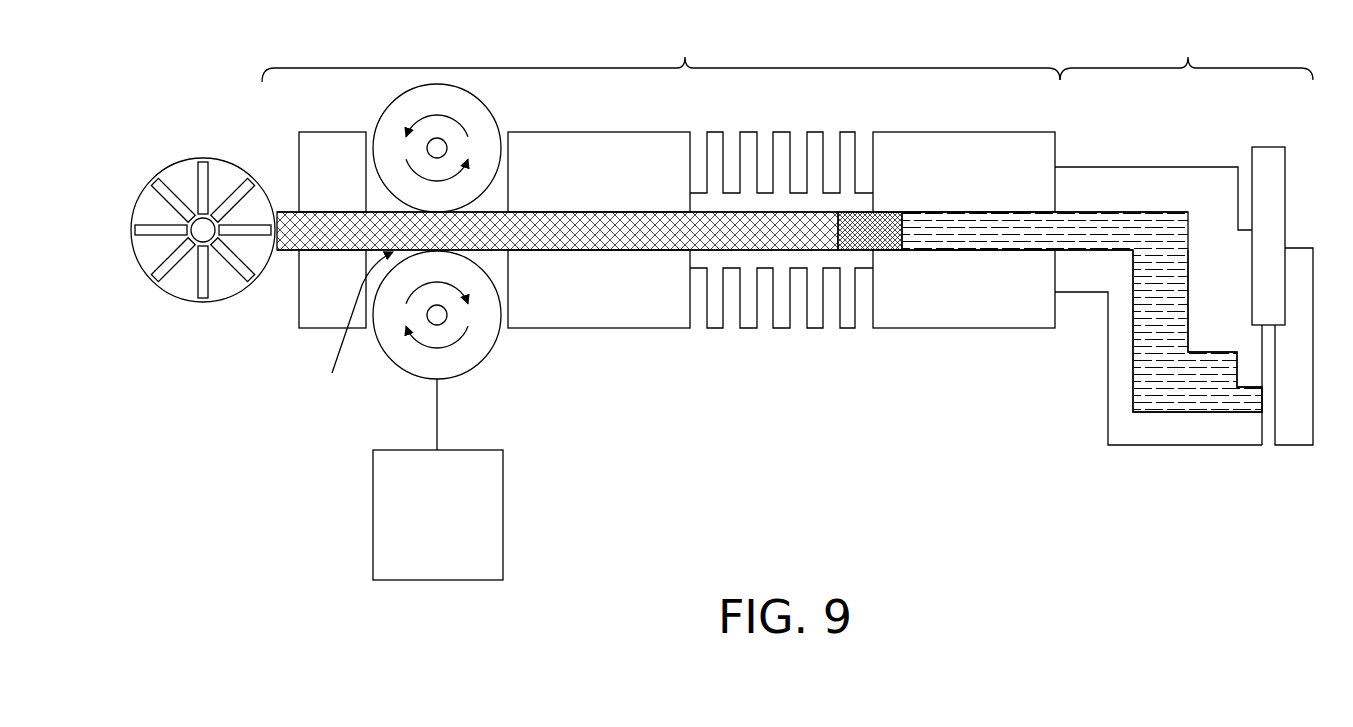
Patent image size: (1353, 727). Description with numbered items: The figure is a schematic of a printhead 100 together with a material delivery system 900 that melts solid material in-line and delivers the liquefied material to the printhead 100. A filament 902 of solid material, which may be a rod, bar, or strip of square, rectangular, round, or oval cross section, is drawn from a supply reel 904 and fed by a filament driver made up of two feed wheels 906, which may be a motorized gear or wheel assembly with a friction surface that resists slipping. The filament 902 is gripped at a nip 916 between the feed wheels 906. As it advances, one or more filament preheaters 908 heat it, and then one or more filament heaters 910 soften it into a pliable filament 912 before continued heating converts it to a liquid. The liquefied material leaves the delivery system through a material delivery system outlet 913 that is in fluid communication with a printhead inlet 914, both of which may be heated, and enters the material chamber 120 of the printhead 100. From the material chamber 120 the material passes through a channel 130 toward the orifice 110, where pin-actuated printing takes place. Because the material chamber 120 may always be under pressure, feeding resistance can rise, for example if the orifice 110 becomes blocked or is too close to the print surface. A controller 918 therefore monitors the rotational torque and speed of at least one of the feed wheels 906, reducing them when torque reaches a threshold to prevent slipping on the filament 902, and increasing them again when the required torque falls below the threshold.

The material delivery system 900 is at (661, 59).
The printhead 100 is at (1184, 239).
The supply reel 904 is at (178, 160).
The filament 902 is at (297, 241).
The feed wheels 906 is at (468, 115).
The filament preheaters 908 is at (313, 310).
The filament heaters 910 is at (812, 315).
The pliable filament 912 is at (862, 217).
The material delivery system outlet 913 is at (1053, 250).
The printhead inlet 914 is at (1055, 212).
The nip 916 is at (352, 327).
The controller 918 is at (438, 479).
The material chamber 120 is at (1157, 237).
The channel 130 is at (1240, 398).
The orifice 110 is at (1268, 432).